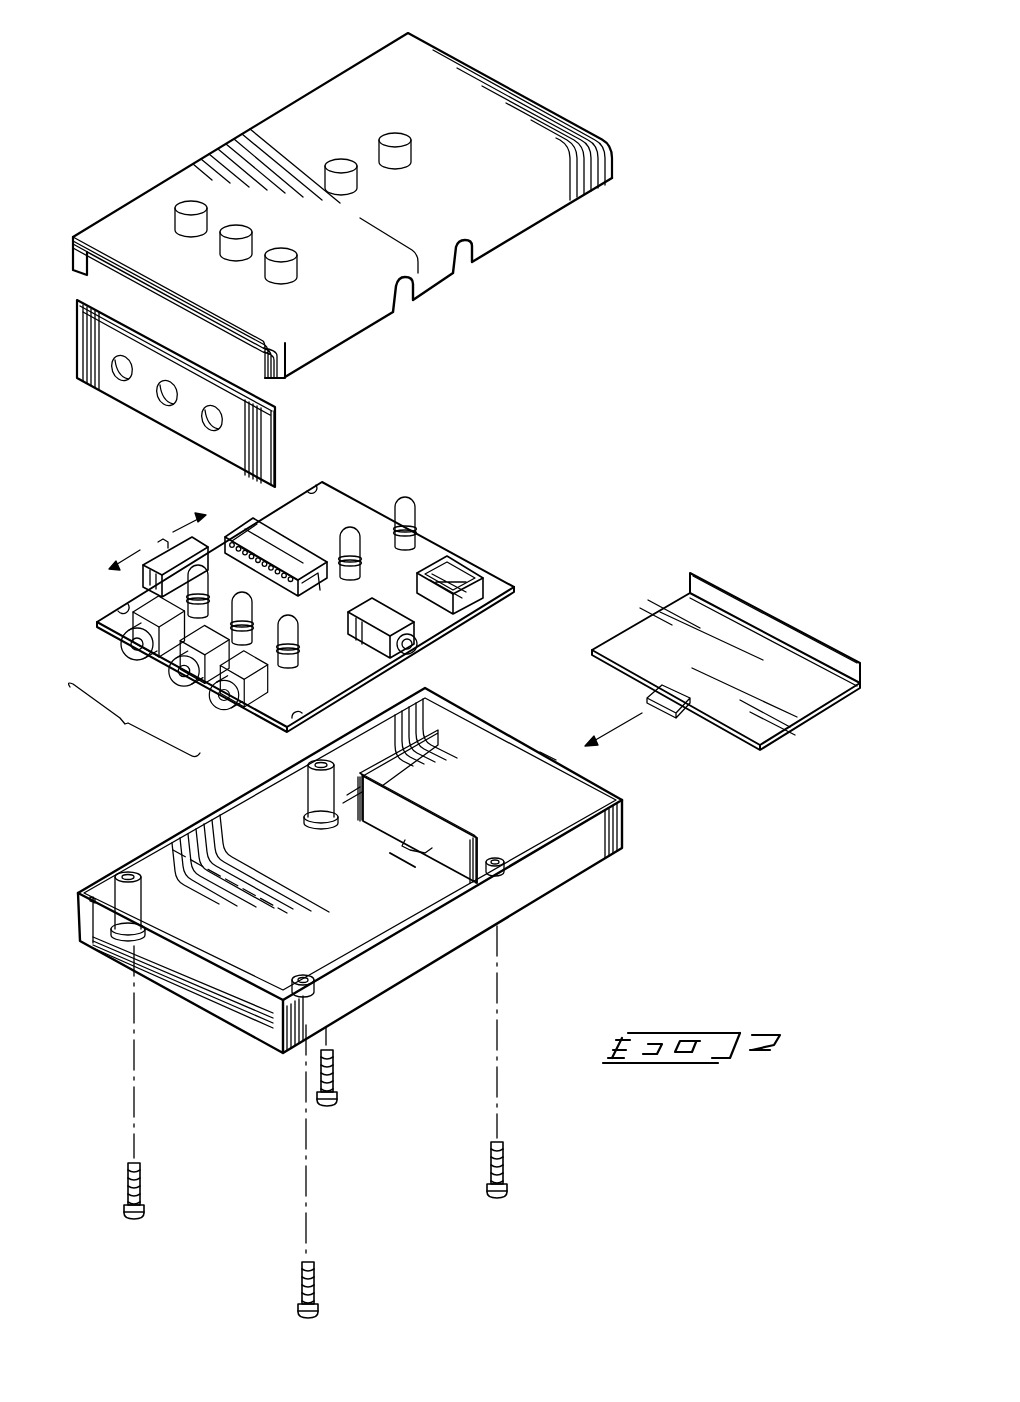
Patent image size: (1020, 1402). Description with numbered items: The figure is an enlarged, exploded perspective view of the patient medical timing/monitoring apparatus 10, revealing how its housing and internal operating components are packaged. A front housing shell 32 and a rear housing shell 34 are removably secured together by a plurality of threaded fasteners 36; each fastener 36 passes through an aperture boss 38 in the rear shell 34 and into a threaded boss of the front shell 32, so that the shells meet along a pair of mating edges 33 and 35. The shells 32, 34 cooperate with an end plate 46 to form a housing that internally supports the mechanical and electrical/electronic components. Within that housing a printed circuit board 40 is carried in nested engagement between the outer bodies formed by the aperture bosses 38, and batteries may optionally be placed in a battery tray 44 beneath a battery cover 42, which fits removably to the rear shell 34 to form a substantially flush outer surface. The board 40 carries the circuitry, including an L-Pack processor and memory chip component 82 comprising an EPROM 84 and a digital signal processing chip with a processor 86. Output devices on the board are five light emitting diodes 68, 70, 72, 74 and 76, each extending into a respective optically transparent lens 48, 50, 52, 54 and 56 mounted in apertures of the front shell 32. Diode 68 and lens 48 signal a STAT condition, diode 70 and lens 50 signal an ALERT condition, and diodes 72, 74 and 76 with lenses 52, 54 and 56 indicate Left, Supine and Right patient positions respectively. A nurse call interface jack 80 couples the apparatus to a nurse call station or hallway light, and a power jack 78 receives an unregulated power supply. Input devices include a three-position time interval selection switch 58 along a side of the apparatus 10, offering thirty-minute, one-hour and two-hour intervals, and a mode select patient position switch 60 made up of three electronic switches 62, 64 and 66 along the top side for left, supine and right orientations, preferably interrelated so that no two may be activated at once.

The medical timing/monitoring apparatus 10 is at (626, 68).
The front housing shell 32 is at (616, 158).
The mating edge 33 is at (538, 228).
The rear housing shell 34 is at (585, 855).
The mating edge 35 is at (470, 722).
The threaded fasteners 36 is at (142, 1192).
The aperture boss 38 is at (124, 874).
The printed circuit board 40 is at (405, 563).
The battery cover 42 is at (775, 612).
The battery tray 44 is at (549, 752).
The end plate 46 is at (138, 400).
The lens 48 is at (395, 138).
The lens 50 is at (341, 165).
The lens 52 is at (188, 200).
The lens 54 is at (238, 230).
The lens 56 is at (283, 253).
The time interval selection switch 58 is at (154, 541).
The mode select patient position switch 60 is at (134, 720).
The electronic switch 62 is at (120, 646).
The electronic switch 64 is at (168, 676).
The electronic switch 66 is at (209, 697).
The light emitting diode 68 is at (410, 497).
The light emitting diode 70 is at (352, 528).
The light emitting diode 72 is at (195, 580).
The light emitting diode 74 is at (247, 601).
The light emitting diode 76 is at (300, 640).
The power jack 78 is at (480, 610).
The nurse call interface jack 80 is at (422, 648).
The L-Pack processor and memory chip component 82 is at (228, 511).
The EPROM 84 is at (273, 535).
The processor 86 is at (318, 585).